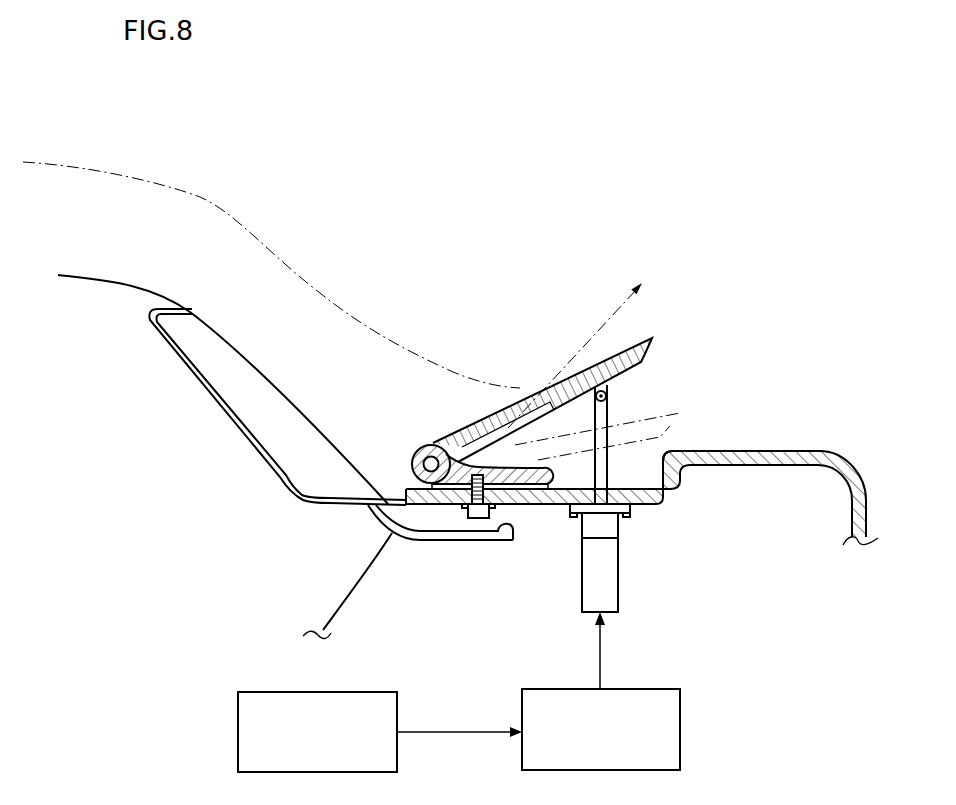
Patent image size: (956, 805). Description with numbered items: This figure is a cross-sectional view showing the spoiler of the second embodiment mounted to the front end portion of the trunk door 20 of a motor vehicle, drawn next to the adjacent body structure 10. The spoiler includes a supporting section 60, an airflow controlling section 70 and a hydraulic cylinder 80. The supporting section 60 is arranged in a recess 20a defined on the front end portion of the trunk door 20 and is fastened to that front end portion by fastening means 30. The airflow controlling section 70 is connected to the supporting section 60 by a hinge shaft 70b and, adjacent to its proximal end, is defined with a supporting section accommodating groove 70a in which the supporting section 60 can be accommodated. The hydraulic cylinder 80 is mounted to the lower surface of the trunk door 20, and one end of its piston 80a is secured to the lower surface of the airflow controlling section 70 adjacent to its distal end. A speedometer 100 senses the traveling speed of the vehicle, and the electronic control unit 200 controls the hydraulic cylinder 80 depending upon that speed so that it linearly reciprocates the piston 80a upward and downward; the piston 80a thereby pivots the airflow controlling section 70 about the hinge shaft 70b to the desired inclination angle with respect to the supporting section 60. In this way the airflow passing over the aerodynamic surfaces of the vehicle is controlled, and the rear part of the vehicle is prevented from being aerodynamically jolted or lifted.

The seat back 10 is at (218, 350).
The trunk door 20 is at (768, 452).
The recess 20a is at (640, 462).
The fastening means 30 is at (475, 512).
The supporting section 60 is at (540, 476).
The airflow controlling section 70 is at (603, 363).
The supporting section accommodating groove 70a is at (508, 428).
The hinge shaft 70b is at (432, 463).
The hydraulic cylinder 80 is at (612, 583).
The piston 80a is at (603, 407).
The speedometer 100 is at (250, 716).
The electronic control unit (ECU) 200 is at (650, 732).